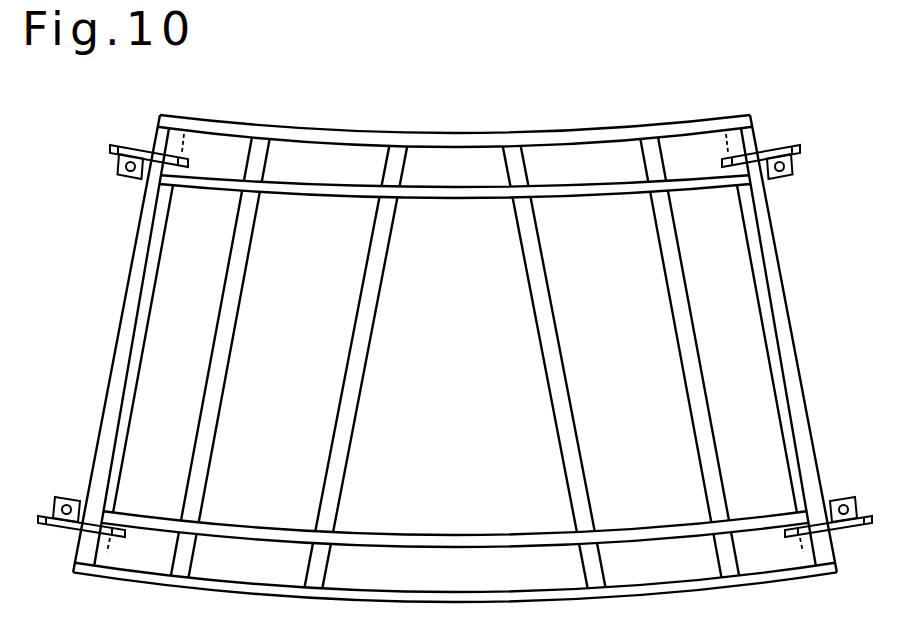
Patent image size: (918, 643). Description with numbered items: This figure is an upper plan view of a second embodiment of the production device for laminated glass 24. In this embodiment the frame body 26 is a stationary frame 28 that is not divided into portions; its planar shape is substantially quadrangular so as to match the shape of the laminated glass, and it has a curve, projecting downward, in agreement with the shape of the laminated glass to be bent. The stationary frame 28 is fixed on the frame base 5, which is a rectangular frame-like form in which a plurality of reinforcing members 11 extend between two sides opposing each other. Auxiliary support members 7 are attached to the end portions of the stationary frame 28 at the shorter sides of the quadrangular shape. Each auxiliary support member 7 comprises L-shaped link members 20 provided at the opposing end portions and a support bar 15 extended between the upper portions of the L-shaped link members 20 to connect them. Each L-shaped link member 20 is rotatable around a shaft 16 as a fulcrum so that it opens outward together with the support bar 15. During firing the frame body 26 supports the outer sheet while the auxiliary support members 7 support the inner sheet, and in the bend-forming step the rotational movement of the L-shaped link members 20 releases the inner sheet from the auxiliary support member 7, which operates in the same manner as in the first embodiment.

The frame base 5 is at (428, 135).
The auxiliary support member 7 is at (121, 141).
The reinforcing member 11 is at (231, 327).
The support bar 15 is at (121, 333).
The shaft 16 is at (185, 136).
The L-shaped link member 20 is at (140, 146).
The production device for laminated glass 24 is at (592, 118).
The frame body 26 is at (457, 184).
The stationary frame 28 is at (452, 548).